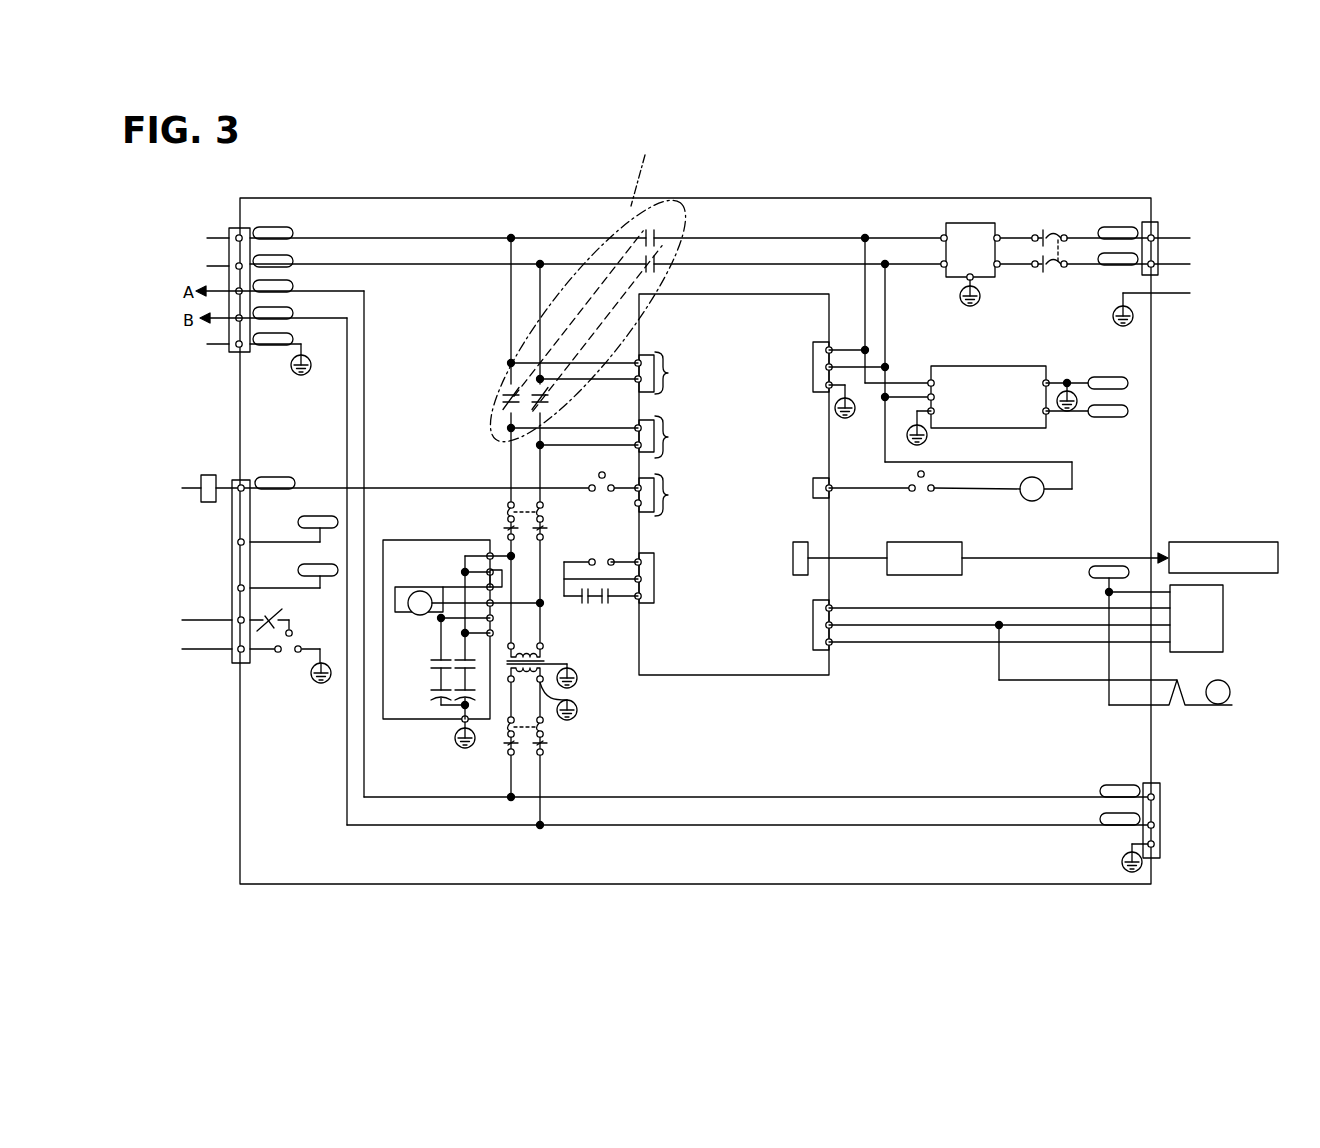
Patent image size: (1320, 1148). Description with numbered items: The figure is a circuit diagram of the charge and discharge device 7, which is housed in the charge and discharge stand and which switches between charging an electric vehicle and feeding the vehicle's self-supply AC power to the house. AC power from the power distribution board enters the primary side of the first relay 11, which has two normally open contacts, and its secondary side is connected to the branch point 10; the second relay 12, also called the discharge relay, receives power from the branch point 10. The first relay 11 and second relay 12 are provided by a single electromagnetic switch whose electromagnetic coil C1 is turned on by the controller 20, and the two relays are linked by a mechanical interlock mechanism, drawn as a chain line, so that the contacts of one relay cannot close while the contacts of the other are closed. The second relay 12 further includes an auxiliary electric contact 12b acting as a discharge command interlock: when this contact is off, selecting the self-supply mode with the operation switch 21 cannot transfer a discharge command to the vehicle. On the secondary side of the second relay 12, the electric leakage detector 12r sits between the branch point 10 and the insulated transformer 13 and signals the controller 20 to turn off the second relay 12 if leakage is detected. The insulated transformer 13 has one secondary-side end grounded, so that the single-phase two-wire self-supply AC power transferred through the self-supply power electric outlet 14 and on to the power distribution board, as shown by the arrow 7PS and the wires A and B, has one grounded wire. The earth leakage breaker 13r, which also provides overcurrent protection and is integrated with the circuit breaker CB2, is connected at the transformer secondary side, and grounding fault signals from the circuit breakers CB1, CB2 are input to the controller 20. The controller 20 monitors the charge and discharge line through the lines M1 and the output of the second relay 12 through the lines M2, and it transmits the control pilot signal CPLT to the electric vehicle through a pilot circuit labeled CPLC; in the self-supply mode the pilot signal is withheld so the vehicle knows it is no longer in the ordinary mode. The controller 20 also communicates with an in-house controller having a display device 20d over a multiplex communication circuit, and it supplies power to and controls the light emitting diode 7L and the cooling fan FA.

The charge and discharge device 7 is at (747, 195).
The arrow 7PS is at (128, 305).
The light emitting diode 7L is at (1223, 627).
The branch point 10 is at (527, 253).
The first relay 11 is at (656, 226).
The second relay 12 is at (505, 394).
The auxiliary electric contact 12b is at (267, 609).
The electric leakage detector 12r is at (412, 720).
The insulated transformer 13 is at (546, 657).
The earth leakage breaker 13r is at (546, 729).
The self-supply power electric outlet 14 is at (1160, 835).
The controller 20 is at (785, 294).
The display device 20d is at (1245, 541).
The operation switch 21 is at (300, 652).
The electromagnetic coil C1 is at (1040, 500).
The circuit breaker CB1 is at (546, 521).
The circuit breaker CB2 is at (546, 739).
The lines for monitoring the charge and discharge operation M1 is at (669, 373).
The lines for monitoring an output of the second relay M2 is at (669, 437).
The pilot control circuit CPLC is at (669, 495).
The control pilot signal CPLT is at (430, 488).
The cooling fan FA is at (1230, 689).